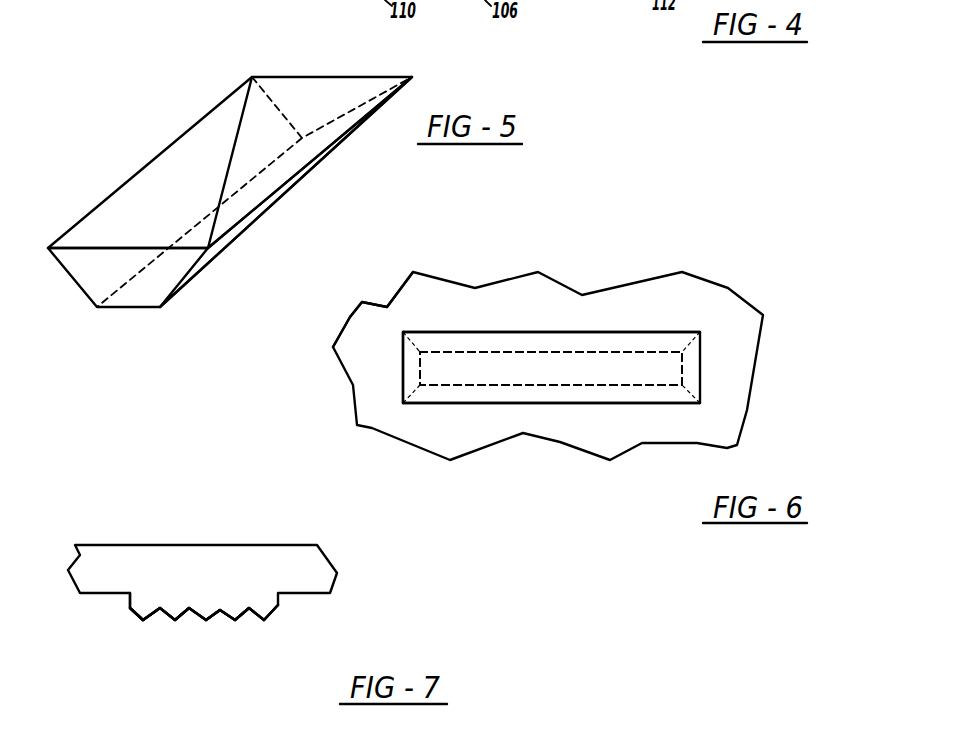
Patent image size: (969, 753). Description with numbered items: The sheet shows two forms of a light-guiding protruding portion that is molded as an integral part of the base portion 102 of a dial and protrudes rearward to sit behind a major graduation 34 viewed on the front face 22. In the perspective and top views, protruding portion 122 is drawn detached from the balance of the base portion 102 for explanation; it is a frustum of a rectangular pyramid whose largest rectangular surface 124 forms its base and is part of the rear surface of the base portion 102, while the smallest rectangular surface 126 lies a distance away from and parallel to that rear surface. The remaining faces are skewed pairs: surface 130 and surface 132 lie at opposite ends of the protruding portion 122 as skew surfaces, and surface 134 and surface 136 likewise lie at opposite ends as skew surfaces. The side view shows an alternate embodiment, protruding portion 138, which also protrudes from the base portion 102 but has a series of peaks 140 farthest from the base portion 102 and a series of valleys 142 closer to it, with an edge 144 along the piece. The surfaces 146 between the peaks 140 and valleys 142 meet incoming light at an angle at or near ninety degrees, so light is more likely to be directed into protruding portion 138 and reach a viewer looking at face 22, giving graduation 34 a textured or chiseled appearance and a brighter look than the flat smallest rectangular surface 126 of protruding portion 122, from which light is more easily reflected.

In FIG. 6, the face 22 is at (728, 318).
In FIG. 6, the major graduation 34 is at (377, 337).
In FIG. 7, the base portion 102 is at (327, 560).
In FIG. 5, the protruding portion 122 is at (206, 60).
In FIG. 5, the largest rectangular surface 124 is at (190, 176).
In FIG. 6, the largest rectangular surface 124 is at (559, 358).
In FIG. 5, the smallest rectangular surface 126 is at (307, 182).
In FIG. 6, the smallest rectangular surface 126 is at (503, 369).
In FIG. 6, the surface 130 is at (684, 364).
In FIG. 6, the surface 132 is at (417, 373).
In FIG. 6, the surface 134 is at (591, 343).
In FIG. 6, the surface 136 is at (587, 398).
In FIG. 7, the protruding portion 138 is at (320, 612).
In FIG. 7, the peaks 140 is at (300, 633).
In FIG. 7, the valleys 142 is at (249, 608).
In FIG. 7, the edge 144 is at (130, 608).
In FIG. 7, the surfaces 146 is at (143, 620).